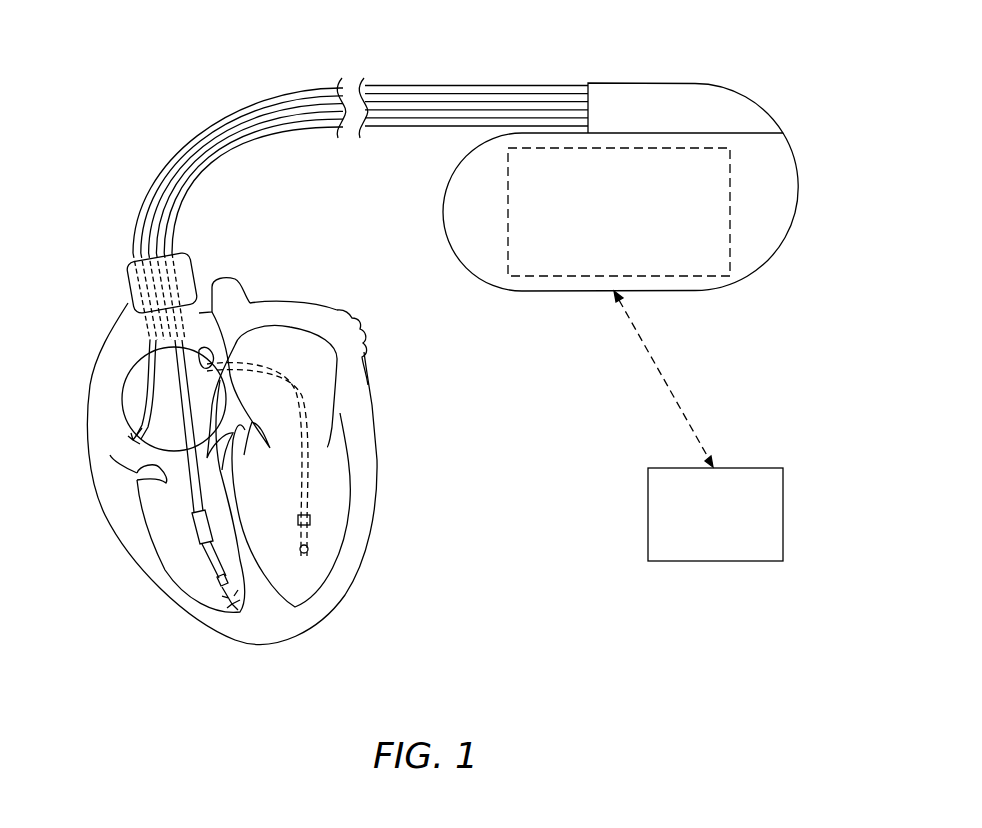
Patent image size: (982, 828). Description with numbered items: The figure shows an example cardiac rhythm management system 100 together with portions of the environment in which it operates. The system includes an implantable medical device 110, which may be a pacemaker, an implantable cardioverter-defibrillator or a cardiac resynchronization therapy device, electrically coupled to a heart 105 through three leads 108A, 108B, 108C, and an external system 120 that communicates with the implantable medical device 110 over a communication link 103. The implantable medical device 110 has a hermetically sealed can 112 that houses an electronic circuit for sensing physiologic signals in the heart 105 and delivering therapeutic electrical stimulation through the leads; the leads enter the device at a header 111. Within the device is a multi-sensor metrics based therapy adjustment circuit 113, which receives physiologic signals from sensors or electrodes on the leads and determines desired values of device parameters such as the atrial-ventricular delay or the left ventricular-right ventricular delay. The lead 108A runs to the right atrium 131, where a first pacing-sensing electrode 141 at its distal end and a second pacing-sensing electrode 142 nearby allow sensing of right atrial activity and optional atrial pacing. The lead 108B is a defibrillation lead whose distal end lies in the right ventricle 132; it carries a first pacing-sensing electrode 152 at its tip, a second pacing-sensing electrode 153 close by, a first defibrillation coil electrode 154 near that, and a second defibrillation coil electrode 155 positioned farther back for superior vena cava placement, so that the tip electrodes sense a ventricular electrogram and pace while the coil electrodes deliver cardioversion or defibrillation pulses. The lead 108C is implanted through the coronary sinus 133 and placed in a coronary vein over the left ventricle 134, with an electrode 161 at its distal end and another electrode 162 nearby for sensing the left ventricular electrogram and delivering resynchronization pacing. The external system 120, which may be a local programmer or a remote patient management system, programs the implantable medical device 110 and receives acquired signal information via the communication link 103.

The cardiac rhythm management system 100 is at (107, 48).
The communication link 103 is at (668, 378).
The heart 105 is at (375, 434).
The lead 108A is at (268, 98).
The lead 108B is at (213, 132).
The lead 108C is at (237, 152).
The implantable medical device 110 is at (650, 164).
The header 111 is at (758, 97).
The hermetically sealed can 112 is at (798, 197).
The multi-sensor metrics based therapy adjustment circuit 113 is at (731, 211).
The external system 120 is at (785, 513).
The right atrium 131 is at (143, 387).
The right ventricle 132 is at (167, 500).
The coronary sinus 133 is at (204, 366).
The left ventricle 134 is at (307, 577).
The first pacing-sensing electrode 141 is at (132, 443).
The second pacing-sensing electrode 142 is at (148, 426).
The first pacing-sensing electrode 152 is at (230, 607).
The second pacing-sensing electrode 153 is at (220, 582).
The first defibrillation coil electrode 154 is at (200, 533).
The second defibrillation coil electrode 155 is at (128, 306).
The electrode 161 is at (313, 547).
The electrode 162 is at (313, 520).